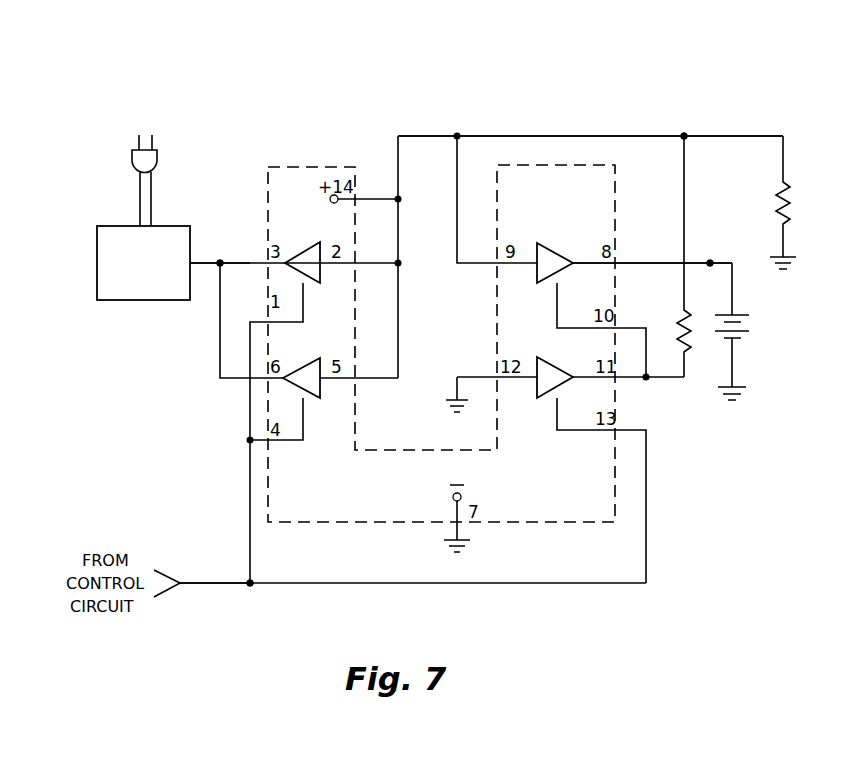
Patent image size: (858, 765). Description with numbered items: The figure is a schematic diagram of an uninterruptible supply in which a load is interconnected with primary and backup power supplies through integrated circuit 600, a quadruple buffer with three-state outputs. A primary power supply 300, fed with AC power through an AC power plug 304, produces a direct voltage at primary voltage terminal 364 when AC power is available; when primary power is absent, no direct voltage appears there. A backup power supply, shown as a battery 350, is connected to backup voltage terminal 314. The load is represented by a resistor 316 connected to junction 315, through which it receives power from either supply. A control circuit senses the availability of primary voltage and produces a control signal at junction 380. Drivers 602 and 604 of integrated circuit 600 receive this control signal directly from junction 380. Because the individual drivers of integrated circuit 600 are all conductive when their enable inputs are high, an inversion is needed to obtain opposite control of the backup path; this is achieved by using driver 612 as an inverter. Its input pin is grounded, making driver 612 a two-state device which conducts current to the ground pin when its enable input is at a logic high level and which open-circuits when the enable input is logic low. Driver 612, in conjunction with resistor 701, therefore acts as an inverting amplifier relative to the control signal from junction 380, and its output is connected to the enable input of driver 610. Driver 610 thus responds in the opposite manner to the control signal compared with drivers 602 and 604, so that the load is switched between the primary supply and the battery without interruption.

The primary power supply 300 is at (158, 300).
The AC power plug 304 is at (158, 163).
The primary voltage terminal 364 is at (222, 258).
The driver 602 is at (303, 246).
The driver 604 is at (316, 398).
The driver 610 is at (558, 250).
The driver 612 is at (549, 398).
The resistor 701 is at (678, 324).
The junction 315 is at (684, 133).
The backup voltage terminal 314 is at (710, 260).
The load resistor 316 is at (778, 199).
The battery 350 is at (749, 331).
The integrated circuit 600 is at (603, 523).
The junction 380 is at (240, 597).